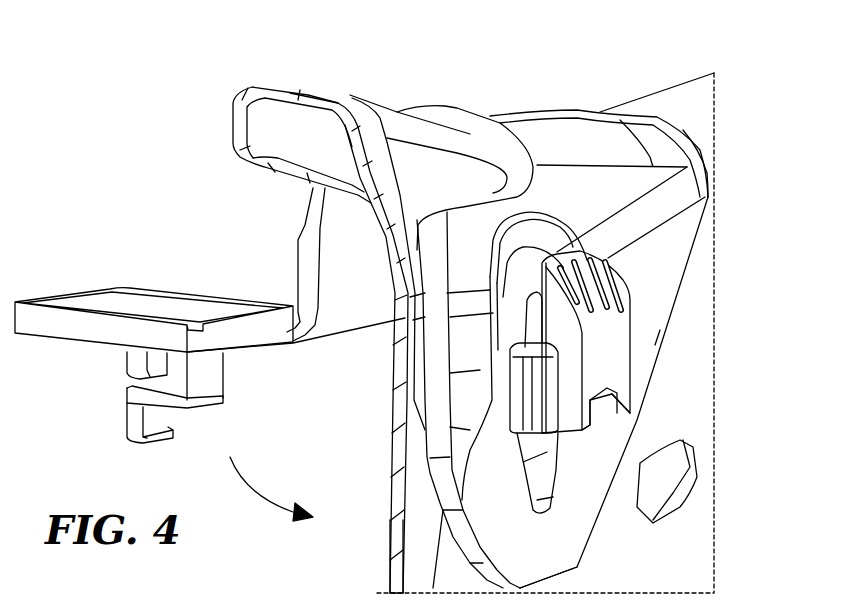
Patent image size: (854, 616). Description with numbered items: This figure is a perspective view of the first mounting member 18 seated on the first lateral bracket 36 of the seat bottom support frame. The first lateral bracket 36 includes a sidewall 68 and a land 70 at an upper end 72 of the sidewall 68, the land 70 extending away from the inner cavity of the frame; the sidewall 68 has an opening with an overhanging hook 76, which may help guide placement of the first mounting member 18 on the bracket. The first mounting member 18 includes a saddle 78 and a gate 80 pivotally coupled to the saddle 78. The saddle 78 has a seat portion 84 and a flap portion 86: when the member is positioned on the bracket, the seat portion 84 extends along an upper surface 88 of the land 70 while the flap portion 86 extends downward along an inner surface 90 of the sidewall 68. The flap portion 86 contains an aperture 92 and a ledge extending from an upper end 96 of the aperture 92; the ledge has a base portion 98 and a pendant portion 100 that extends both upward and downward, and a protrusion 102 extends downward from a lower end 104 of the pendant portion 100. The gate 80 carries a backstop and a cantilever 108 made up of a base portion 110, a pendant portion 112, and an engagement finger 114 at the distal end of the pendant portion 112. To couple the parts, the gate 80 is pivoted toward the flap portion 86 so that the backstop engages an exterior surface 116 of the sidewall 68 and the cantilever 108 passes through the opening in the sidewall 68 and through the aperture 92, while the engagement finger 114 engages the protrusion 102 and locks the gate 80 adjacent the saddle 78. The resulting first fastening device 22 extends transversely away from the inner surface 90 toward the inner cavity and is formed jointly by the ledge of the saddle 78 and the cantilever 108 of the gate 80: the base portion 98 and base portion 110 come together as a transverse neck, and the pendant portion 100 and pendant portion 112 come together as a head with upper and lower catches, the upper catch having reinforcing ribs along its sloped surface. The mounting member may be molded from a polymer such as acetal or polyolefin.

The first mounting member 18 is at (133, 178).
The first fastening device 22 is at (655, 306).
The first lateral bracket 36 is at (647, 95).
The sidewall 68 is at (390, 550).
The land 70 is at (351, 97).
The upper end 72 is at (309, 78).
The overhanging hook 76 is at (535, 352).
The saddle 78 is at (707, 227).
The gate 80 is at (133, 287).
The seat portion 84 is at (572, 108).
The flap portion 86 is at (573, 568).
The upper surface 88 is at (272, 84).
The inner surface 90 is at (690, 360).
The aperture 92 is at (524, 477).
The upper end 96 is at (508, 345).
The base portion 98 is at (525, 317).
The pendant portion 100 is at (610, 267).
The protrusion 102 is at (595, 408).
The lower end 104 is at (623, 427).
The cantilever 108 is at (127, 395).
The base portion 110 is at (223, 367).
The pendant portion 112 is at (203, 410).
The engagement finger 114 is at (137, 447).
The exterior surface 116 is at (390, 442).